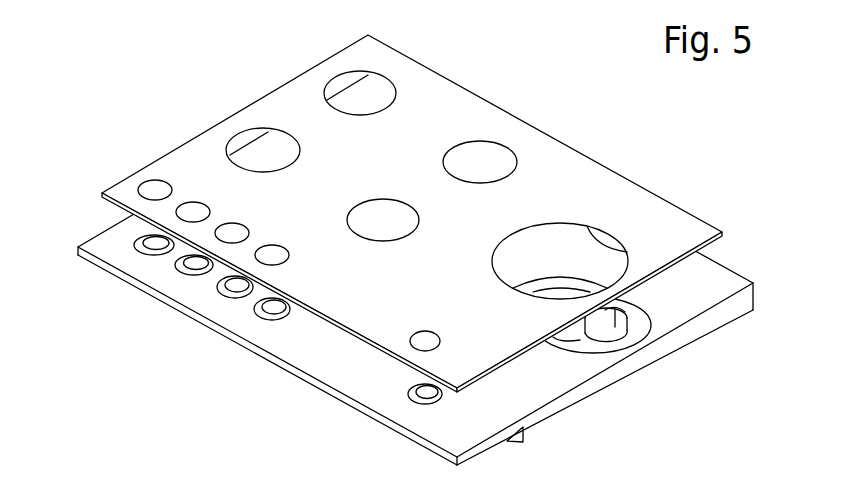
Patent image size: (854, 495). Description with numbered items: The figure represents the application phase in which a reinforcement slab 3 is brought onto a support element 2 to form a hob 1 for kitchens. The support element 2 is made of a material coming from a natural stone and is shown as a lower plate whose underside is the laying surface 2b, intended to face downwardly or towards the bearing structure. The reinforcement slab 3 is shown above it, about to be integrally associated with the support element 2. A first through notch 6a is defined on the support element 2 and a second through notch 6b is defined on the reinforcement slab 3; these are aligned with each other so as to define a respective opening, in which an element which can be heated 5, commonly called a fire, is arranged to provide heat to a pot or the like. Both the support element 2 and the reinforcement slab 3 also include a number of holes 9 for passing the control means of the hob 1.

The hob 1 is at (722, 143).
The support element 2 is at (106, 246).
The laying surface 2b is at (338, 352).
The reinforcement slab 3 is at (268, 97).
The element which can be heated 5 is at (586, 338).
The first through notch 6a is at (618, 333).
The second through notch 6b is at (623, 250).
The holes 9 is at (133, 254).